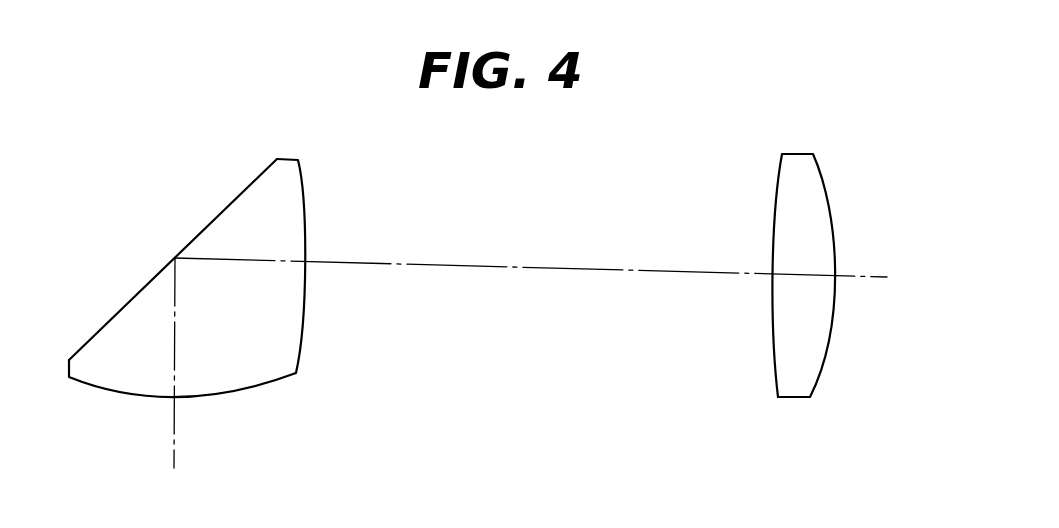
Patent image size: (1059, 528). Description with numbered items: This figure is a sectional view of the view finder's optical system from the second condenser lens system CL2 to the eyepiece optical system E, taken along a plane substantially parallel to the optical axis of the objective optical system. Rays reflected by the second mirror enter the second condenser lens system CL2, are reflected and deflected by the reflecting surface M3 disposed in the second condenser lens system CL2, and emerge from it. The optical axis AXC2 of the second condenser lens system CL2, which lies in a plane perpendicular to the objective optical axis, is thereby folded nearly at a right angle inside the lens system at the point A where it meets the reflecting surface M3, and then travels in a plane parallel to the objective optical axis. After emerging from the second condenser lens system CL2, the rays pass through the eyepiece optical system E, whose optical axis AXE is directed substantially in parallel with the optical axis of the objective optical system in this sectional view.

The second condenser lens system CL2 is at (294, 202).
The reflecting surface M3 is at (242, 191).
The intersection point of optical axes A is at (175, 256).
The optical axis of the second condenser lens system AXC2 is at (173, 307).
The optical axis of the eyepiece optical system AXE is at (497, 265).
The eyepiece optical system E is at (798, 398).